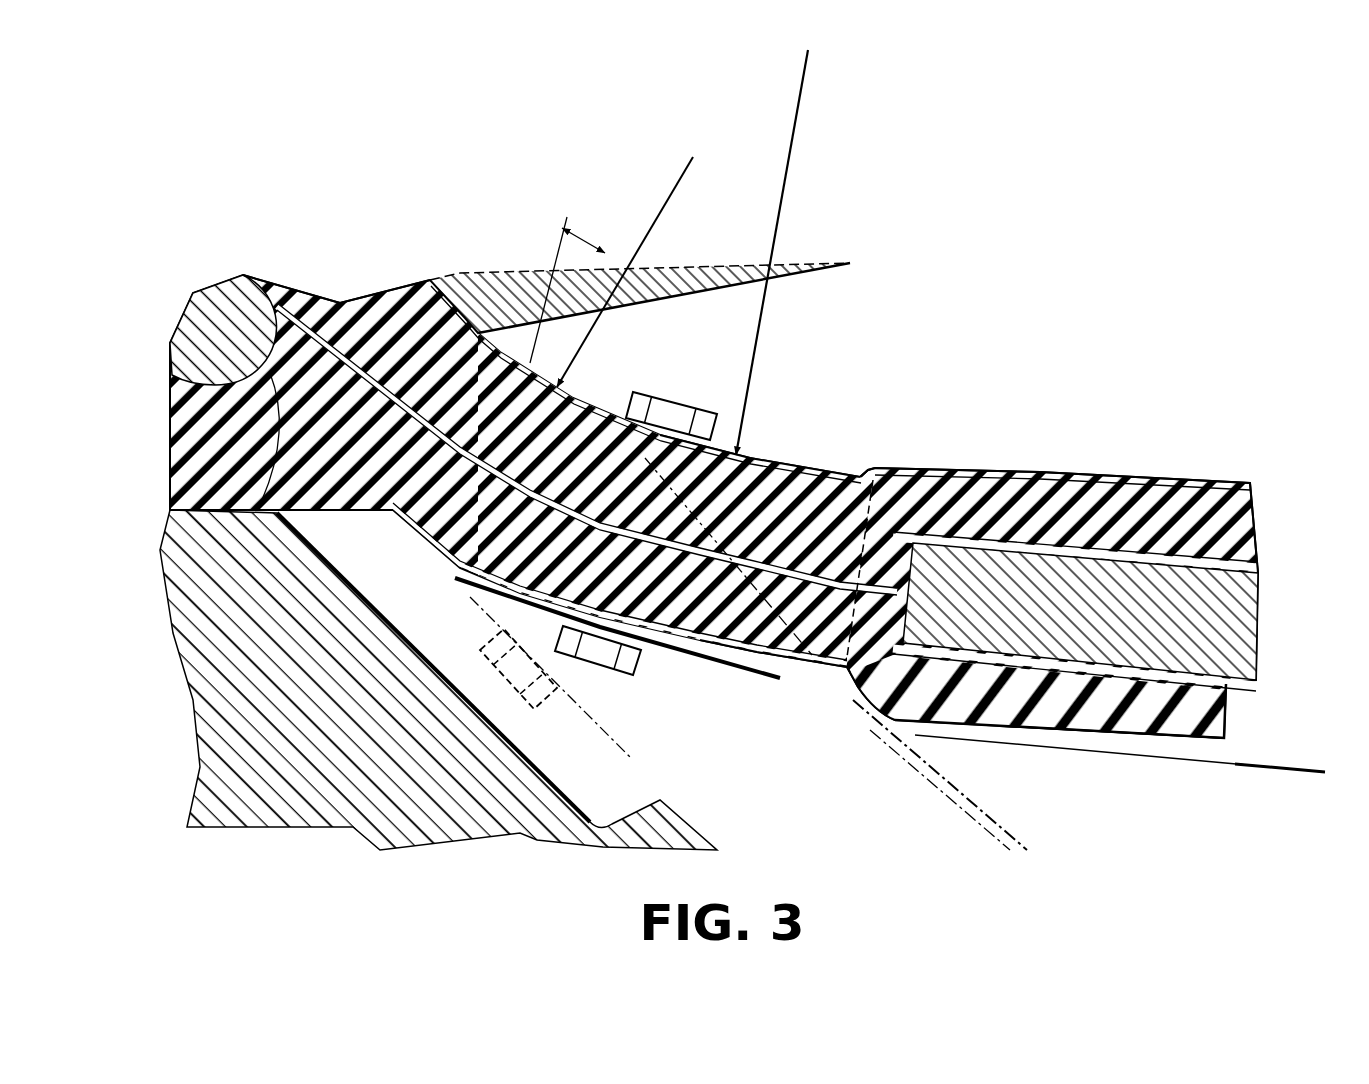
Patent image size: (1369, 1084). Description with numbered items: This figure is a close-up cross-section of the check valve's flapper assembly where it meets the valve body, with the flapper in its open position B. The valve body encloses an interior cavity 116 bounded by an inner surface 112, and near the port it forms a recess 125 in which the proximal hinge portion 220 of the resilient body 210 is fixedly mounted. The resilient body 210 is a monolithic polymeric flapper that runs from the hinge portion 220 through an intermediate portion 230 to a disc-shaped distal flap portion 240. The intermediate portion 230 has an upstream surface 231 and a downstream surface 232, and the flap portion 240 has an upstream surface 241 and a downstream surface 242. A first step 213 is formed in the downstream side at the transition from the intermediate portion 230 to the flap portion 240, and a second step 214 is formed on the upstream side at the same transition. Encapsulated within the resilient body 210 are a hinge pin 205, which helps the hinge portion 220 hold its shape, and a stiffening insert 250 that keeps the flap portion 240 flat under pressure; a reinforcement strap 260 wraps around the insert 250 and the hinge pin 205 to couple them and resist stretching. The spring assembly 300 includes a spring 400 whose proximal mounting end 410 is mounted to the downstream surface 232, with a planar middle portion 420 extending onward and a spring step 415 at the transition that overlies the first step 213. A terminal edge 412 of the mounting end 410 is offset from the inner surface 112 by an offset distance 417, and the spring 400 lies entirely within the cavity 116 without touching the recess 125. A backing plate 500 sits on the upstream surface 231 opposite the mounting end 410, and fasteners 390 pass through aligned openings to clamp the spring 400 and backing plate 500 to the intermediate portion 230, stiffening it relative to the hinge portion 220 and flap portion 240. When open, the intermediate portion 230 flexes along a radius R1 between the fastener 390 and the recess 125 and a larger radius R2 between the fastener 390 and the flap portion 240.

The inner surface 112 is at (792, 282).
The interior cavity 116 is at (640, 305).
The recess 125 is at (358, 330).
The hinge pin 205 is at (232, 510).
The resilient body 210 is at (330, 298).
The first step 213 is at (873, 468).
The second step 214 is at (853, 697).
The proximal hinge portion 220 is at (205, 462).
The intermediate portion 230 is at (727, 612).
The upstream surface 231 is at (802, 668).
The downstream surface 232 is at (808, 462).
The distal flap portion 240 is at (1073, 707).
The upstream surface 241 is at (1160, 740).
The downstream surface 242 is at (1153, 493).
The stiffening insert 250 is at (1012, 690).
The reinforcement strap 260 is at (193, 400).
The spring assembly 300 is at (1003, 468).
The fasteners 390 is at (688, 393).
The spring 400 is at (1123, 478).
The proximal mounting end 410 is at (763, 460).
The terminal edge 412 is at (525, 372).
The spring step 415 is at (882, 462).
The offset distance 417 is at (585, 255).
The middle portion 420 is at (1212, 487).
The backing plate 500 is at (537, 608).
The open position B is at (1250, 768).
The radius R1 is at (656, 215).
The radius R2 is at (790, 148).